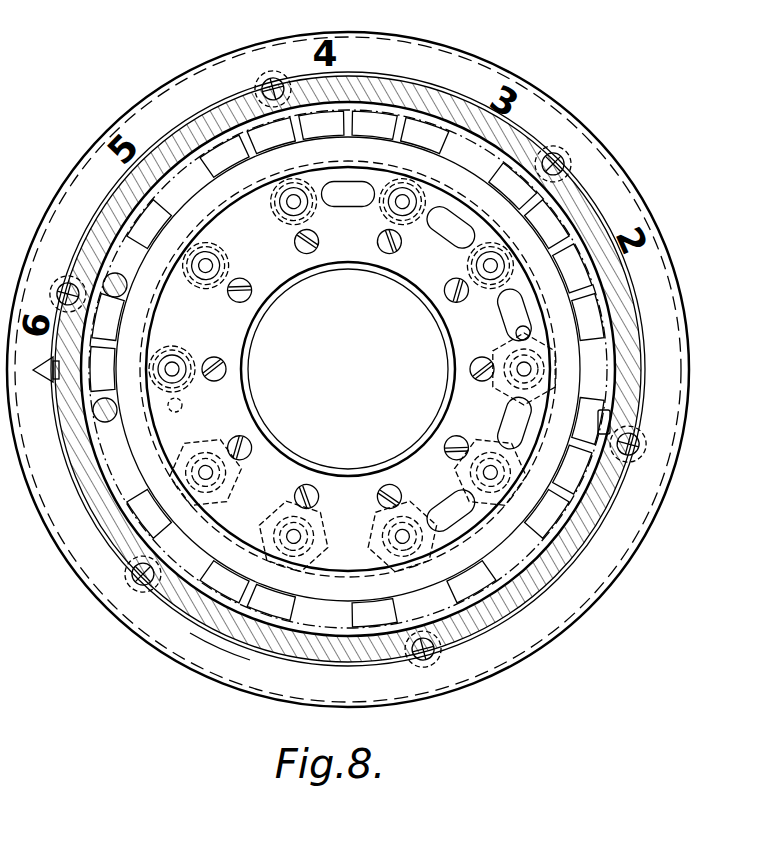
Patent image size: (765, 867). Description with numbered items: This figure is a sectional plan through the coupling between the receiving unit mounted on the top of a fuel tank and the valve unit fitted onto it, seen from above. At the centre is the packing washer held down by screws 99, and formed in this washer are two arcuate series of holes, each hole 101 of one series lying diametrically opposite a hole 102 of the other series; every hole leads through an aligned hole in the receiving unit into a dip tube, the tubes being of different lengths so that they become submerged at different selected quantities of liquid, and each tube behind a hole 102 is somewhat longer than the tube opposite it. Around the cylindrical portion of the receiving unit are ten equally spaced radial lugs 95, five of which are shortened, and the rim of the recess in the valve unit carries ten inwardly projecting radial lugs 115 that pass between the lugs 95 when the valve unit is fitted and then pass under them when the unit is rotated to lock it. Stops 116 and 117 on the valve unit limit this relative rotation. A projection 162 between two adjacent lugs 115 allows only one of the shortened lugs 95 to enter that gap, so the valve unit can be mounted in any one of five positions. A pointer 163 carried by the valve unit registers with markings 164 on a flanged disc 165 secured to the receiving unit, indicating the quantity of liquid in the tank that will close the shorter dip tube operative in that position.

The radial lugs 95 is at (172, 135).
The screws 99 is at (385, 252).
The holes 101 is at (478, 266).
The holes 102 is at (205, 473).
The inwardly projecting radial lugs 115 is at (510, 173).
The stop 116 is at (117, 413).
The stop 117 is at (127, 289).
The projection 162 is at (614, 422).
The pointer 163 is at (43, 385).
The markings 164 is at (335, 52).
The flanged disc 165 is at (190, 633).